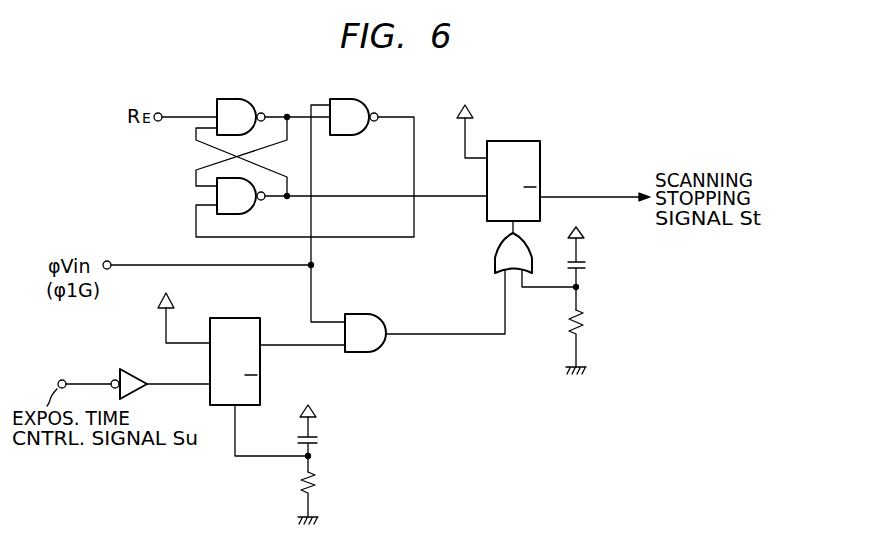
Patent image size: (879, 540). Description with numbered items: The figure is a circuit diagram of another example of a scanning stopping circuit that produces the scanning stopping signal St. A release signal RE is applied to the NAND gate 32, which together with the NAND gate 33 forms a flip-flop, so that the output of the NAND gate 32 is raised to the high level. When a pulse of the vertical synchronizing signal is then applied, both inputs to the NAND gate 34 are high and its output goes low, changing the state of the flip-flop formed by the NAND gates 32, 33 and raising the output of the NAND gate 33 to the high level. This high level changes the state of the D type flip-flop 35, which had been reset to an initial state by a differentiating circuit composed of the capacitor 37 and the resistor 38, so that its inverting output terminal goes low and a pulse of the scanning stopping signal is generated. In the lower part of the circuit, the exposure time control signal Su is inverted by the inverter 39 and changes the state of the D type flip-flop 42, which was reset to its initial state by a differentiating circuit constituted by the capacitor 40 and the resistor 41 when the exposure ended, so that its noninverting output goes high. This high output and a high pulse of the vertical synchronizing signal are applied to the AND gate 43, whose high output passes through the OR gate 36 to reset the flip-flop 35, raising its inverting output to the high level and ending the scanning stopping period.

The NAND gate 32 is at (238, 99).
The NAND gate 33 is at (250, 209).
The NAND gate 34 is at (351, 99).
The D type flip-flop 35 is at (520, 141).
The OR gate 36 is at (495, 261).
The capacitor 37 is at (588, 264).
The resistor 38 is at (588, 326).
The inverter 39 is at (128, 369).
The capacitor 40 is at (319, 441).
The resistor 41 is at (319, 487).
The D type flip-flop 42 is at (242, 318).
The AND gate 43 is at (372, 314).